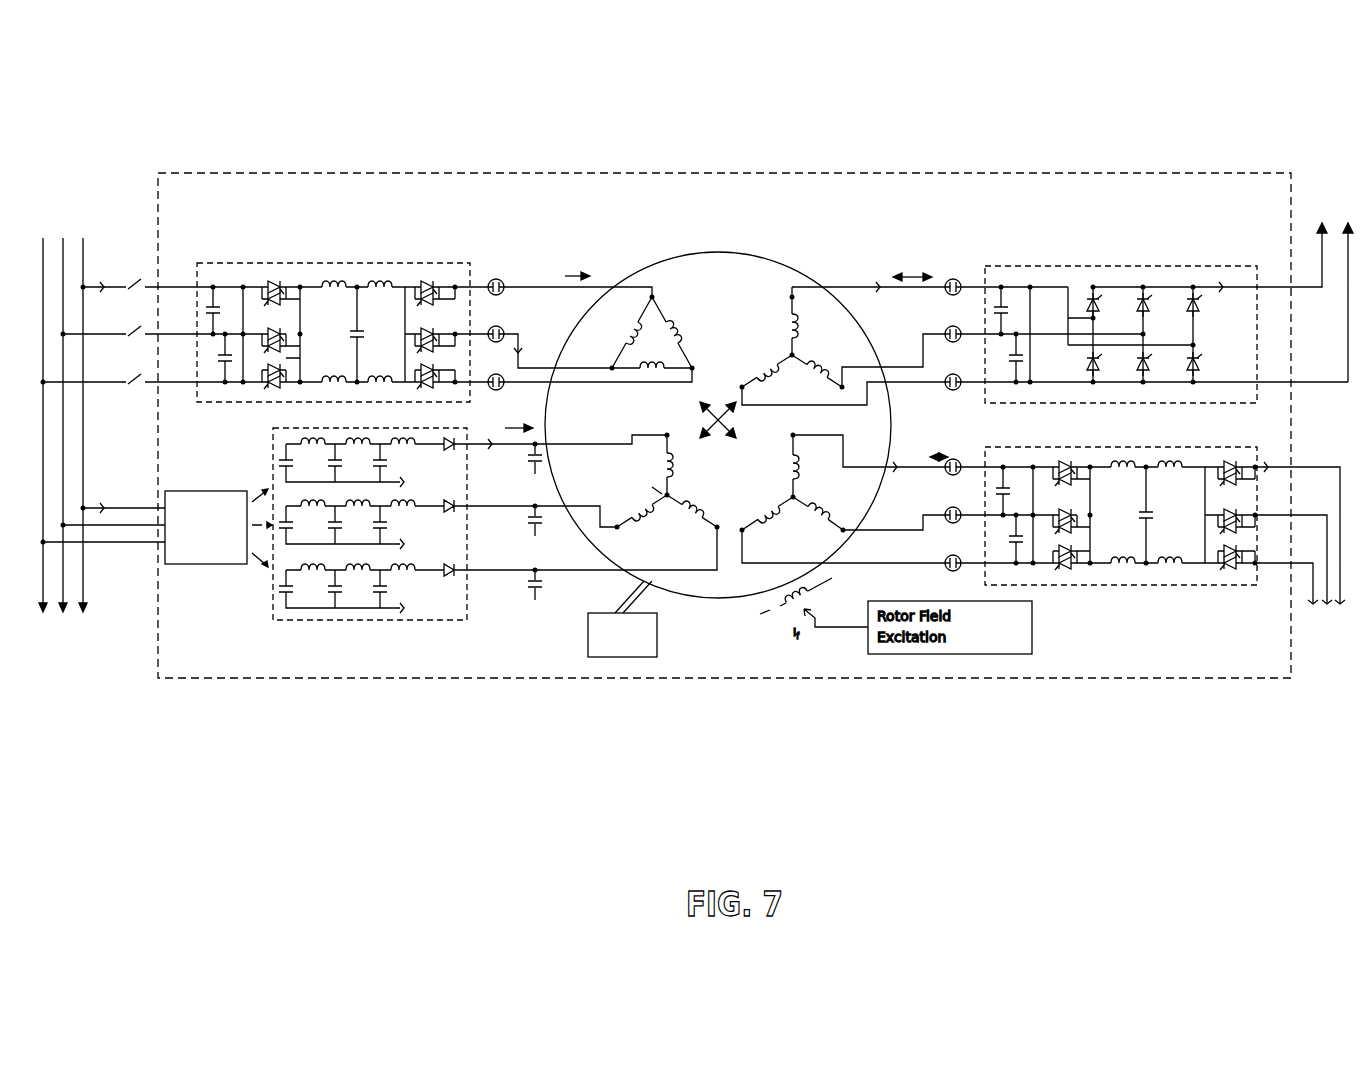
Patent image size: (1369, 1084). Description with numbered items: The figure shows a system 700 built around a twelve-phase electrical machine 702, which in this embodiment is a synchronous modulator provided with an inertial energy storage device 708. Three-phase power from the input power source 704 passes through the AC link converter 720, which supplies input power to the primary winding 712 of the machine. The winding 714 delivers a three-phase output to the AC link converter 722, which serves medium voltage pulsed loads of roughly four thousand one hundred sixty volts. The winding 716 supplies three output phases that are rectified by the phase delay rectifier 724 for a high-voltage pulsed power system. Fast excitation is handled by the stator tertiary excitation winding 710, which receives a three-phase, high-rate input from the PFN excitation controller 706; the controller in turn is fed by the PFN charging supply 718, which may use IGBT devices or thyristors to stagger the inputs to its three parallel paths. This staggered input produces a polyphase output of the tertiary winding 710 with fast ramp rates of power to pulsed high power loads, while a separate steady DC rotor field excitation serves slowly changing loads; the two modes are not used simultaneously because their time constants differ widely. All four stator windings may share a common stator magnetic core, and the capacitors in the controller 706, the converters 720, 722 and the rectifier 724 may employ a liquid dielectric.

The system 700 is at (977, 174).
The electrical machine 702 is at (718, 401).
The input power source 704 is at (118, 408).
The PFN excitation controller 706 is at (407, 546).
The inertial energy storage device 708 is at (599, 624).
The stator tertiary excitation winding 710 is at (641, 502).
The winding 712 is at (599, 345).
The winding 714 is at (841, 331).
The winding 716 is at (851, 499).
The PFN charging supply 718 is at (218, 514).
The AC link converter 720 is at (350, 318).
The AC link converter 722 is at (1153, 511).
The phase delay rectifier 724 is at (1157, 313).